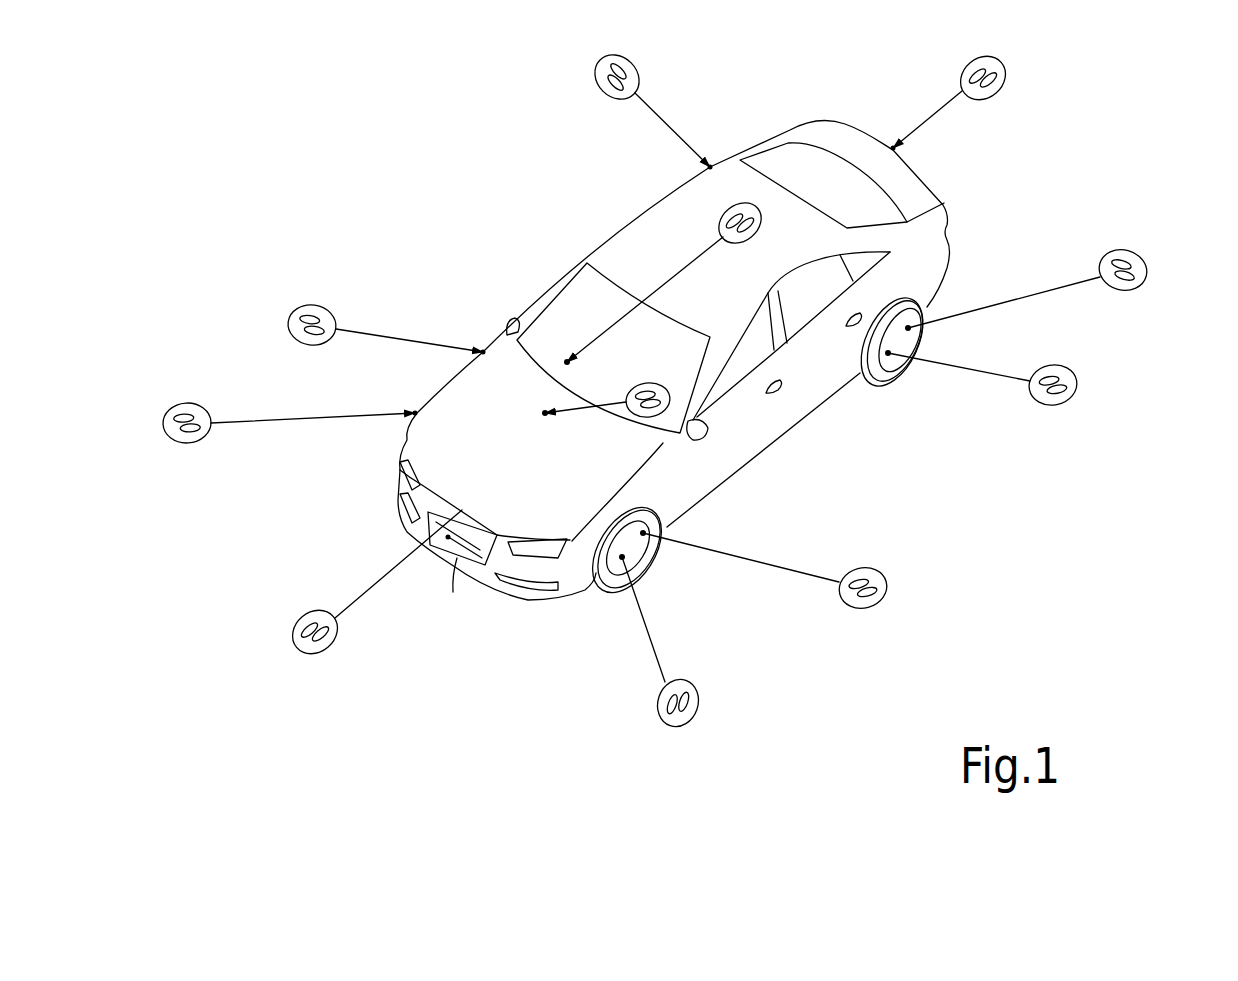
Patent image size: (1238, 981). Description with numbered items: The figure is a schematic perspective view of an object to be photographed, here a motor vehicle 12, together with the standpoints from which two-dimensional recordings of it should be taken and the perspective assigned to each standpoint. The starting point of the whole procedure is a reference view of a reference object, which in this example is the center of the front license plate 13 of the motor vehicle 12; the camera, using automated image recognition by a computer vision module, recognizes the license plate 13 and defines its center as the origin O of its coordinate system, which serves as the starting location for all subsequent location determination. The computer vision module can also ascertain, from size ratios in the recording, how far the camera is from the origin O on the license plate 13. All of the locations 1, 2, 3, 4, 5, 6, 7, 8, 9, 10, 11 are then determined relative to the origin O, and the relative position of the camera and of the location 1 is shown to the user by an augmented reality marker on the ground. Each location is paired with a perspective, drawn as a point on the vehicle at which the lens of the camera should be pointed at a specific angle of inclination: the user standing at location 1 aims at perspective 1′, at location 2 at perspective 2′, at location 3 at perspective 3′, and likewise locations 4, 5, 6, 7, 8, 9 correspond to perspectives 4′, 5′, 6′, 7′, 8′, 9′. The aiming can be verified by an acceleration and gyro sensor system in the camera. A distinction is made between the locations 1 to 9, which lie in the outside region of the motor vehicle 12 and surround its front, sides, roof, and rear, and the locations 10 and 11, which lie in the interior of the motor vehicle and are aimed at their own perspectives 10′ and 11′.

The location 1 is at (291, 630).
The location 2 is at (702, 703).
The location 3 is at (887, 584).
The location 4 is at (1077, 381).
The location 5 is at (1146, 263).
The location 6 is at (1005, 72).
The location 7 is at (594, 72).
The location 8 is at (288, 320).
The location 9 is at (163, 421).
The location 10 is at (651, 384).
The location 11 is at (763, 228).
The motor vehicle 12 is at (780, 440).
The front license plate 13 is at (407, 530).
The perspective 1′ is at (448, 537).
The perspective 2′ is at (626, 560).
The perspective 3′ is at (647, 533).
The perspective 4′ is at (890, 356).
The perspective 5′ is at (910, 326).
The perspective 6′ is at (893, 146).
The perspective 7′ is at (711, 165).
The perspective 8′ is at (483, 350).
The perspective 9′ is at (413, 414).
The perspective 10′ is at (543, 413).
The perspective 11′ is at (567, 360).
The origin O is at (450, 588).